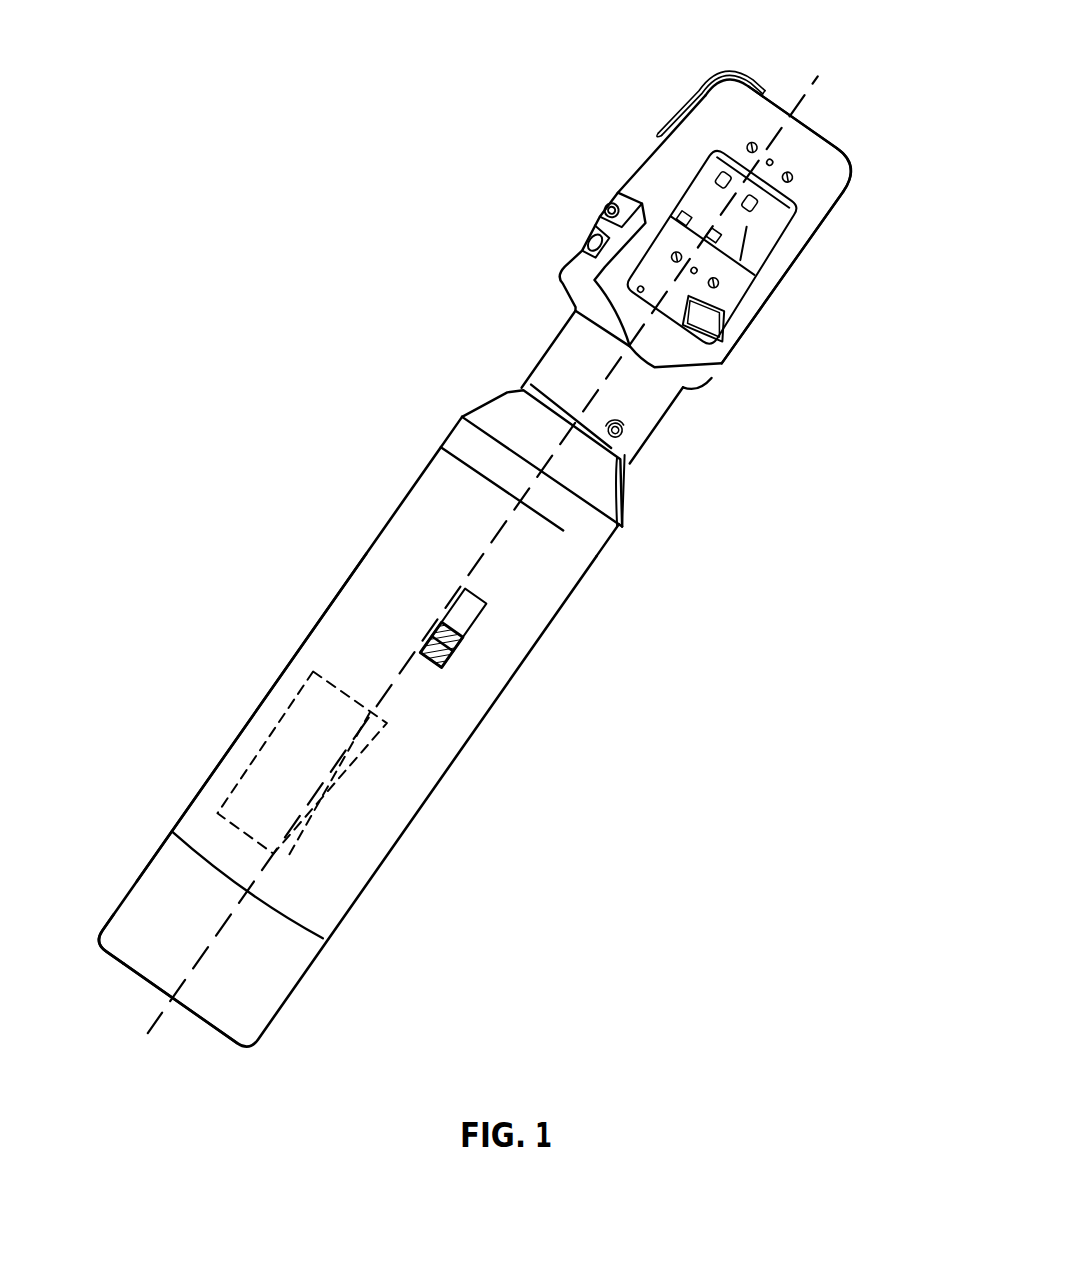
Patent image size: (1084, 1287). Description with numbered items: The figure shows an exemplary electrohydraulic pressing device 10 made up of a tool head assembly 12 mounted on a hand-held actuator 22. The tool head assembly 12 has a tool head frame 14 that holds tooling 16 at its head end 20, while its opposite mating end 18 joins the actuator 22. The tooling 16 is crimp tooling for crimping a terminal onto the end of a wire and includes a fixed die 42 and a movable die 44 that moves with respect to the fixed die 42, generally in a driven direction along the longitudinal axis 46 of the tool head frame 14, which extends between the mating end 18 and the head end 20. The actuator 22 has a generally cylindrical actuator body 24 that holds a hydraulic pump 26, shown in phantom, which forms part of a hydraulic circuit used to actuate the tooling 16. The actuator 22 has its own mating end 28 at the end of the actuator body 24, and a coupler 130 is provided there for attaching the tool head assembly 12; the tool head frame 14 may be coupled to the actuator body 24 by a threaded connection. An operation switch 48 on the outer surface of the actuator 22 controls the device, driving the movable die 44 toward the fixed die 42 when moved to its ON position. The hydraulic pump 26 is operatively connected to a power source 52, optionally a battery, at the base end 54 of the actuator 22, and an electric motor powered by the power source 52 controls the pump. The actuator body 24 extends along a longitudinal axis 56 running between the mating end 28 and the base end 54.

The electrohydraulic pressing device 10 is at (275, 195).
The tool head assembly 12 is at (590, 118).
The tool head frame 14 is at (832, 185).
The tooling 16 is at (820, 260).
The mating end 18 is at (622, 462).
The head end 20 is at (818, 128).
The actuator 22 is at (298, 553).
The actuator body 24 is at (475, 730).
The hydraulic pump 26 is at (283, 740).
The mating end 28 is at (622, 477).
The fixed die 42 is at (778, 218).
The movable die 44 is at (747, 277).
The longitudinal axis 46 is at (803, 100).
The operation switch 48 is at (450, 630).
The power source 52 is at (277, 980).
The base end 54 is at (210, 1033).
The longitudinal axis 56 is at (180, 980).
The coupler 130 is at (480, 405).